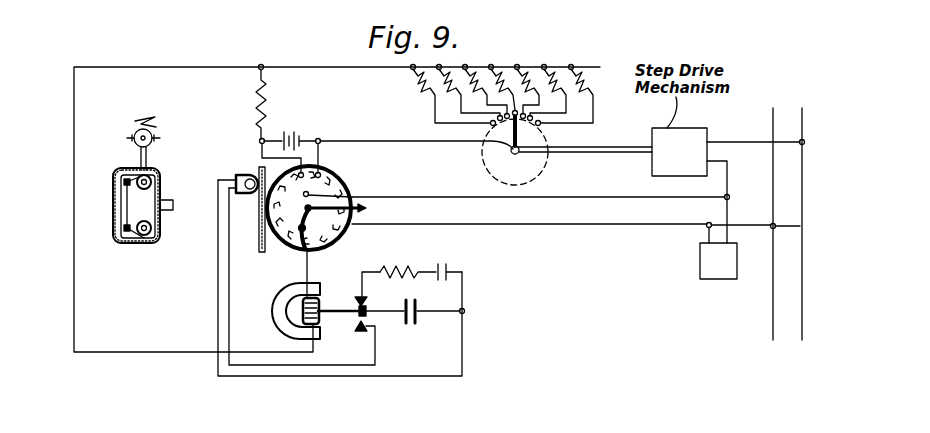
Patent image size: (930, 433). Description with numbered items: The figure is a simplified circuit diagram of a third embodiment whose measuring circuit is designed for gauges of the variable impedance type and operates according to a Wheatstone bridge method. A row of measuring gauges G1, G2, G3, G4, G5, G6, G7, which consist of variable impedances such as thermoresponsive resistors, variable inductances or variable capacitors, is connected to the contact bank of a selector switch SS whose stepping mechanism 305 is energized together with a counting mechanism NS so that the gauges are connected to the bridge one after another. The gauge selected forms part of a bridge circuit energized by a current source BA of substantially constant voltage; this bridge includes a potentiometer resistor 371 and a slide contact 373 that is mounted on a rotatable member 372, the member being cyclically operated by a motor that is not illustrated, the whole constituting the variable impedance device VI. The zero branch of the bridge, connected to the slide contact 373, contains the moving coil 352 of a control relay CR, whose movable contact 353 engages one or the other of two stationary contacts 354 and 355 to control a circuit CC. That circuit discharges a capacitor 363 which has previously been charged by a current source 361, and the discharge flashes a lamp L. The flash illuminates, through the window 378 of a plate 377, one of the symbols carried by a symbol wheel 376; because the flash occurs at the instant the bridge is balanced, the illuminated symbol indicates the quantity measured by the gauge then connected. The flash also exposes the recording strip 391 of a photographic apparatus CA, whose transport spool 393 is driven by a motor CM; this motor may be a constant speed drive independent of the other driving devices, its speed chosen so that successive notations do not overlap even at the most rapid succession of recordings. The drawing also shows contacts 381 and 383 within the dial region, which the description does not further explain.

The stepping mechanism 305 is at (705, 129).
The moving coil 352 is at (317, 299).
The movable contact 353 is at (346, 329).
The stationary contact 354 is at (368, 296).
The stationary contact 355 is at (358, 332).
The current source 361 is at (449, 268).
The capacitor 363 is at (408, 324).
The potentiometer resistor 371 is at (346, 186).
The rotatable member 372 is at (324, 210).
The slide contact 373 is at (320, 250).
The symbol wheel 376 is at (328, 170).
The plate 377 is at (259, 236).
The window 378 is at (259, 207).
The contact 381 is at (290, 200).
The contact 383 is at (294, 250).
The recording strip 391 is at (121, 204).
The transport spool 393 is at (155, 174).
The current source BA is at (285, 138).
The drive motor CM is at (137, 146).
The photographic recording apparatus CA is at (151, 214).
The lamp L is at (238, 177).
The variable impedance device VI is at (392, 219).
The selector switch SS is at (526, 175).
The counting mechanism NS is at (728, 270).
The control relay CR is at (327, 313).
The control circuit CC is at (446, 352).
The measuring gauge G1 is at (451, 94).
The measuring gauge G2 is at (469, 91).
The measuring gauge G3 is at (485, 90).
The measuring gauge G4 is at (502, 88).
The measuring gauge G5 is at (527, 90).
The measuring gauge G6 is at (548, 91).
The measuring gauge G7 is at (567, 94).